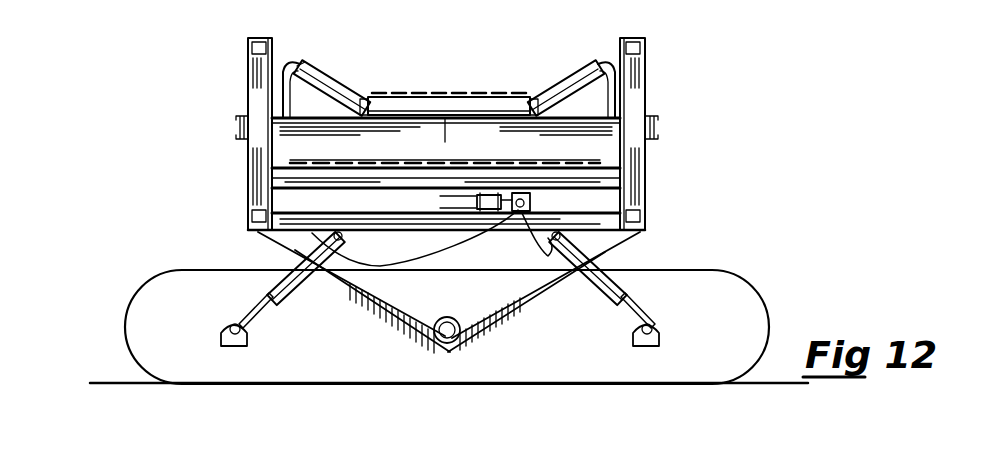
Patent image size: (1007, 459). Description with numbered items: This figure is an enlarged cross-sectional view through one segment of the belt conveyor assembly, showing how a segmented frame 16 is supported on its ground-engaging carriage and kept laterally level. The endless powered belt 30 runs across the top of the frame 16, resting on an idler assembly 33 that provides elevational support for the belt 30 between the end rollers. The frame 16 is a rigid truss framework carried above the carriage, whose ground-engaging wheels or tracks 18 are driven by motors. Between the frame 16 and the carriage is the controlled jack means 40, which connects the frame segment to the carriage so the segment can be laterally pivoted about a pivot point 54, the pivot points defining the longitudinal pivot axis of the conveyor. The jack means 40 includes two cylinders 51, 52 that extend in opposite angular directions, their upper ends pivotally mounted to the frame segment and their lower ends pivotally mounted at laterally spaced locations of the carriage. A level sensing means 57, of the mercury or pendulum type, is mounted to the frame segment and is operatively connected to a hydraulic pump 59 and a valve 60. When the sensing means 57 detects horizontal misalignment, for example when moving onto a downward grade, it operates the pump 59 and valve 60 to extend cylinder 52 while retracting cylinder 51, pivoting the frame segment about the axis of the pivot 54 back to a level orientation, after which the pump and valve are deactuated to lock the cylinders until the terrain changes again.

The segmented frame 16 is at (248, 82).
The ground-engaging wheels or tracks 18 is at (127, 312).
The endless powered belt 30 is at (462, 95).
The idler assemblies 33 is at (474, 137).
The controlled jack means 40 is at (283, 292).
The cylinder 51 is at (292, 260).
The cylinder 52 is at (602, 268).
The pivot point 54 is at (456, 336).
The level sensing means 57 is at (424, 206).
The hydraulic pump 59 is at (487, 196).
The valve 60 is at (533, 203).